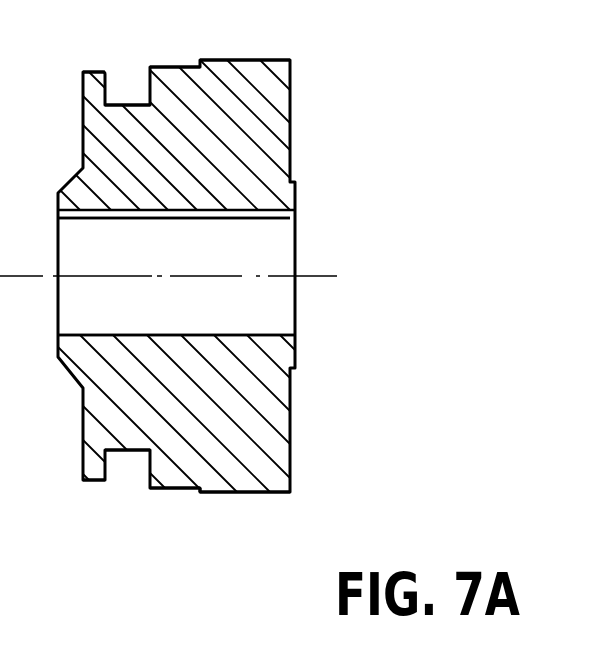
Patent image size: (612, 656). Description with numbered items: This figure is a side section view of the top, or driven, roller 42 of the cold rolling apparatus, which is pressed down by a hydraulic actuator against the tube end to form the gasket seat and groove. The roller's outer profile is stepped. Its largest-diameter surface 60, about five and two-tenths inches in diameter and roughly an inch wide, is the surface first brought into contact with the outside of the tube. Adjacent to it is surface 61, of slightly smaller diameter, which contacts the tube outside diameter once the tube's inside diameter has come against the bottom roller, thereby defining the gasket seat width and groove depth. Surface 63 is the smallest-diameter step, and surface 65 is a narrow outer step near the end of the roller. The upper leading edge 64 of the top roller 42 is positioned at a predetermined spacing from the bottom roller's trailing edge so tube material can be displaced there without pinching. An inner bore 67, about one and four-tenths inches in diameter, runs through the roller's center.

The top roller 42 is at (303, 153).
The surface 60 is at (247, 60).
The surface 61 is at (173, 65).
The surface 63 is at (123, 103).
The upper leading edge of the top roller 64 is at (203, 492).
The surface 65 is at (89, 68).
The inner bore 67 is at (258, 333).